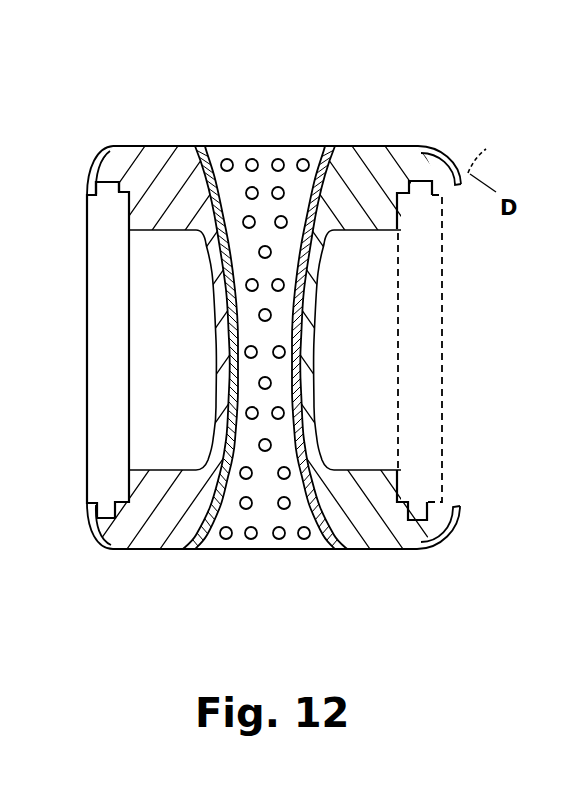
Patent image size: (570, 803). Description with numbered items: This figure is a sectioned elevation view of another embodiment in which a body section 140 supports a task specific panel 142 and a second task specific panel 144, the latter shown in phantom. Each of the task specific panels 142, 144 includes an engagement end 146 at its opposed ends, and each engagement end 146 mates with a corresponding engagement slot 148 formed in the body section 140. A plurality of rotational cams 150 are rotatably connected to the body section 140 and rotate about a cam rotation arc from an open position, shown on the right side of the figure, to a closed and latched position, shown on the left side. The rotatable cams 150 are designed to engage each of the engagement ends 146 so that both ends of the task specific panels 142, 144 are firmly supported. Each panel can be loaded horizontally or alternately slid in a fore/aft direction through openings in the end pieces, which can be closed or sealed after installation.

The body section 140 is at (210, 113).
The task specific panel 142 is at (95, 242).
The task specific panel 144 is at (444, 353).
The engagement end 146 is at (116, 181).
The engagement slot 148 is at (423, 173).
The rotational cam 150 is at (94, 160).